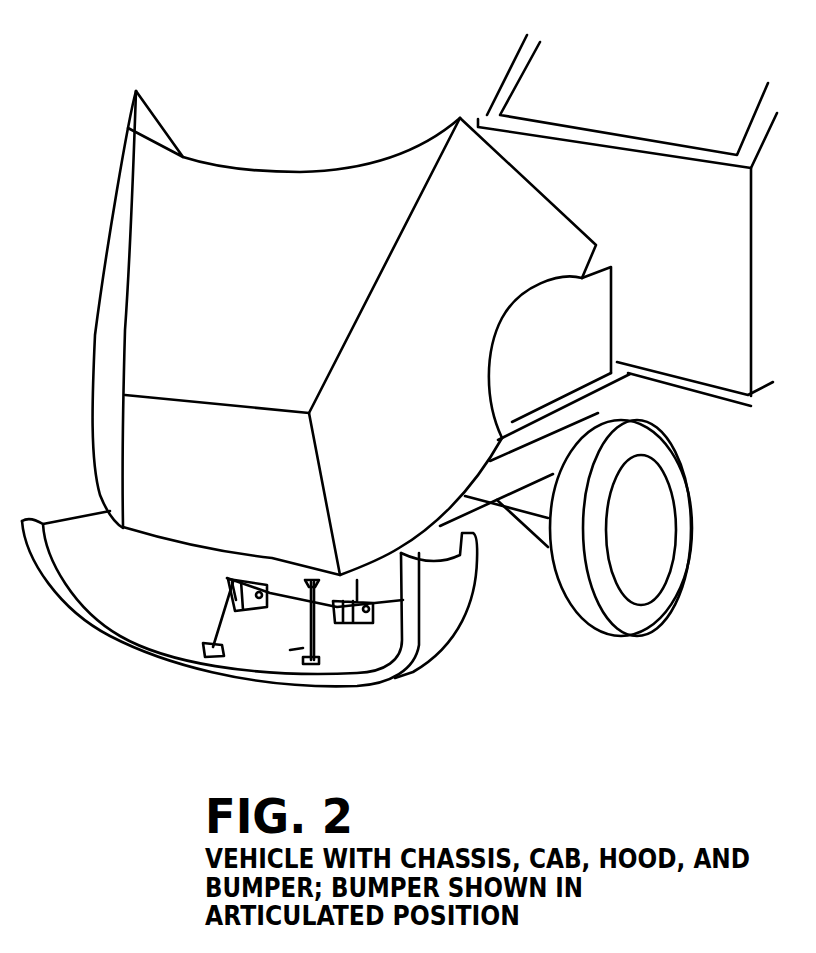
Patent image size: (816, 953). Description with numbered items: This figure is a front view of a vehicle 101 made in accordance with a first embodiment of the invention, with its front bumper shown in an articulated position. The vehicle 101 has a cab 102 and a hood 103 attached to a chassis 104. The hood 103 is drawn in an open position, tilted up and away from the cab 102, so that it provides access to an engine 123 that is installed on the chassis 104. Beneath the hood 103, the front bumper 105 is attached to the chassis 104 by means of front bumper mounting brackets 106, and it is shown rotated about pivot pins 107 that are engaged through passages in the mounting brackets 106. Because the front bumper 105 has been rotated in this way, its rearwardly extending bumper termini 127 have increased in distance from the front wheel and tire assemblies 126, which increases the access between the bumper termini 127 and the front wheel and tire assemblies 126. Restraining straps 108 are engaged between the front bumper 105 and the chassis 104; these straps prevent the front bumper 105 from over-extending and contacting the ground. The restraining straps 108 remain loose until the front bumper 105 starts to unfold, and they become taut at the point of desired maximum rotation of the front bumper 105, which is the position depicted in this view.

The vehicle 101 is at (502, 80).
The cab 102 is at (494, 98).
The hood 103 is at (128, 134).
The chassis 104 is at (673, 409).
The front bumper 105 is at (101, 630).
The front bumper mounting brackets 106 is at (207, 630).
The pivot pins 107 is at (247, 614).
The restraining straps 108 is at (234, 604).
The engine 123 is at (572, 352).
The front wheel and tire assemblies 126 is at (566, 594).
The bumper termini 127 is at (443, 585).